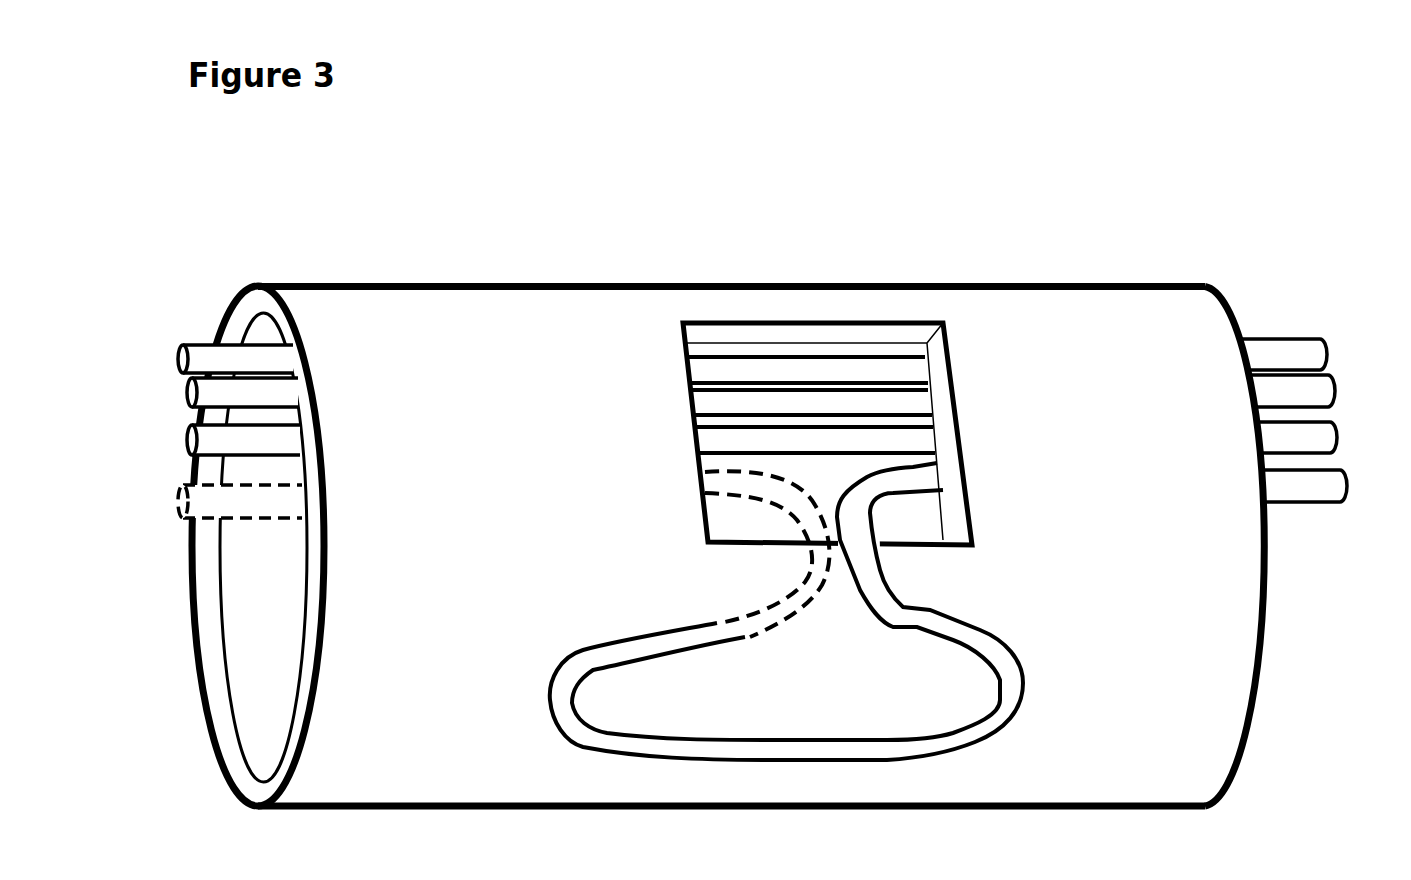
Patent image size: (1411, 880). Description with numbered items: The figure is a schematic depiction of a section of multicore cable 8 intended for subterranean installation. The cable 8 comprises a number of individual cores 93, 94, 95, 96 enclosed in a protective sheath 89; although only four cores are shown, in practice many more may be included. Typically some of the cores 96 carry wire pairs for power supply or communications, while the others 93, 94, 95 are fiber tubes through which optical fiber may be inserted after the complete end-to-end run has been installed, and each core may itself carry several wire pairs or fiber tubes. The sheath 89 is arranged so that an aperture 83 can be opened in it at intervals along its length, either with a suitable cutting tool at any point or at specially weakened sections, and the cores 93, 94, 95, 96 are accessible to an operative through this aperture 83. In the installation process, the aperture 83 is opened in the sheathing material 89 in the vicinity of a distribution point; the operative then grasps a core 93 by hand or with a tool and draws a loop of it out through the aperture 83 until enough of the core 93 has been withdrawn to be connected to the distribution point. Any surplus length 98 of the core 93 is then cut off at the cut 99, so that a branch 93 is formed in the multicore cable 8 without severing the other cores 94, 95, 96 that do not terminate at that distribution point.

The multicore cable 8 is at (761, 520).
The protective sheath 89 is at (258, 561).
The aperture 83 is at (841, 434).
The core 93 is at (762, 611).
The core 94 is at (752, 437).
The core 95 is at (758, 397).
The core 96 is at (752, 359).
The surplus length 98 is at (767, 554).
The cut 99 is at (753, 643).